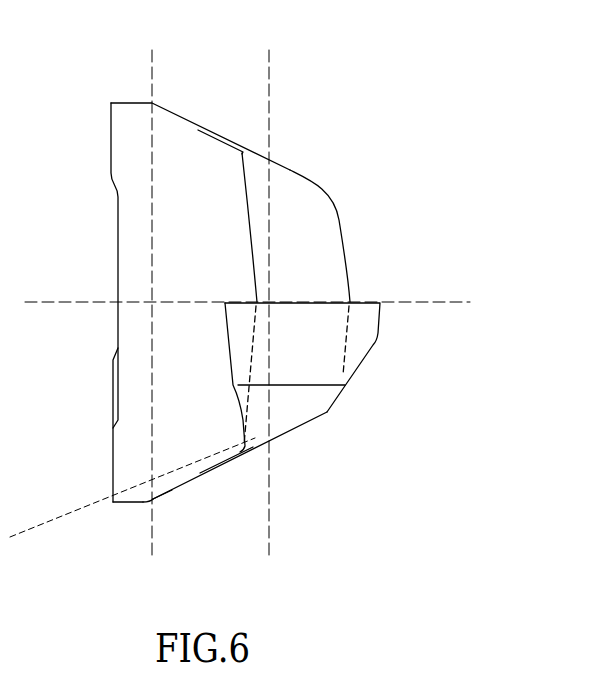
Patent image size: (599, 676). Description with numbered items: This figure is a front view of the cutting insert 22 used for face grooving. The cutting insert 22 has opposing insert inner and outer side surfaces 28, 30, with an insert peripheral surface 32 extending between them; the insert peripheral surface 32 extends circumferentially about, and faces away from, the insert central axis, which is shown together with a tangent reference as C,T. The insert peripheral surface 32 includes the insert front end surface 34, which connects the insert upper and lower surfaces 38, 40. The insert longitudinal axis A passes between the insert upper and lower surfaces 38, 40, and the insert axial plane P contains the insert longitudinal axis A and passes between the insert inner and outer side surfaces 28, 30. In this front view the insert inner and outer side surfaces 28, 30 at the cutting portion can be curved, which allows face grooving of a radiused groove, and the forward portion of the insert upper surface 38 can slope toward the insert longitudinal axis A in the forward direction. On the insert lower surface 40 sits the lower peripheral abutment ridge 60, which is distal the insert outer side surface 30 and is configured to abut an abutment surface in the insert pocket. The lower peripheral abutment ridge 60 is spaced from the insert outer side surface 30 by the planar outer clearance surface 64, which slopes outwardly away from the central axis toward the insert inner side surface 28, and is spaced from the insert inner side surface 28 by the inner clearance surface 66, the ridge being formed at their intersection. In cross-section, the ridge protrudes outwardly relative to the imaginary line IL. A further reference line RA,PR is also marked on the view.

The cutting insert 22 is at (457, 80).
The insert inner side surface 28 is at (118, 208).
The insert outer side surface 30 is at (337, 208).
The insert peripheral surface 32 is at (289, 190).
The insert front end surface 34 is at (318, 356).
The insert upper surface 38 is at (212, 129).
The insert lower surface 40 is at (217, 473).
The lower peripheral abutment ridge 60 is at (153, 503).
The outer clearance surface 64 is at (172, 493).
The inner clearance surface 66 is at (124, 503).
The insert longitudinal axis A is at (268, 302).
The imaginary line IL is at (334, 416).
The insert axial plane P is at (270, 289).
The rotation axis / pitch reference RA,PR is at (154, 291).
The center / tangent plane C,T is at (462, 300).